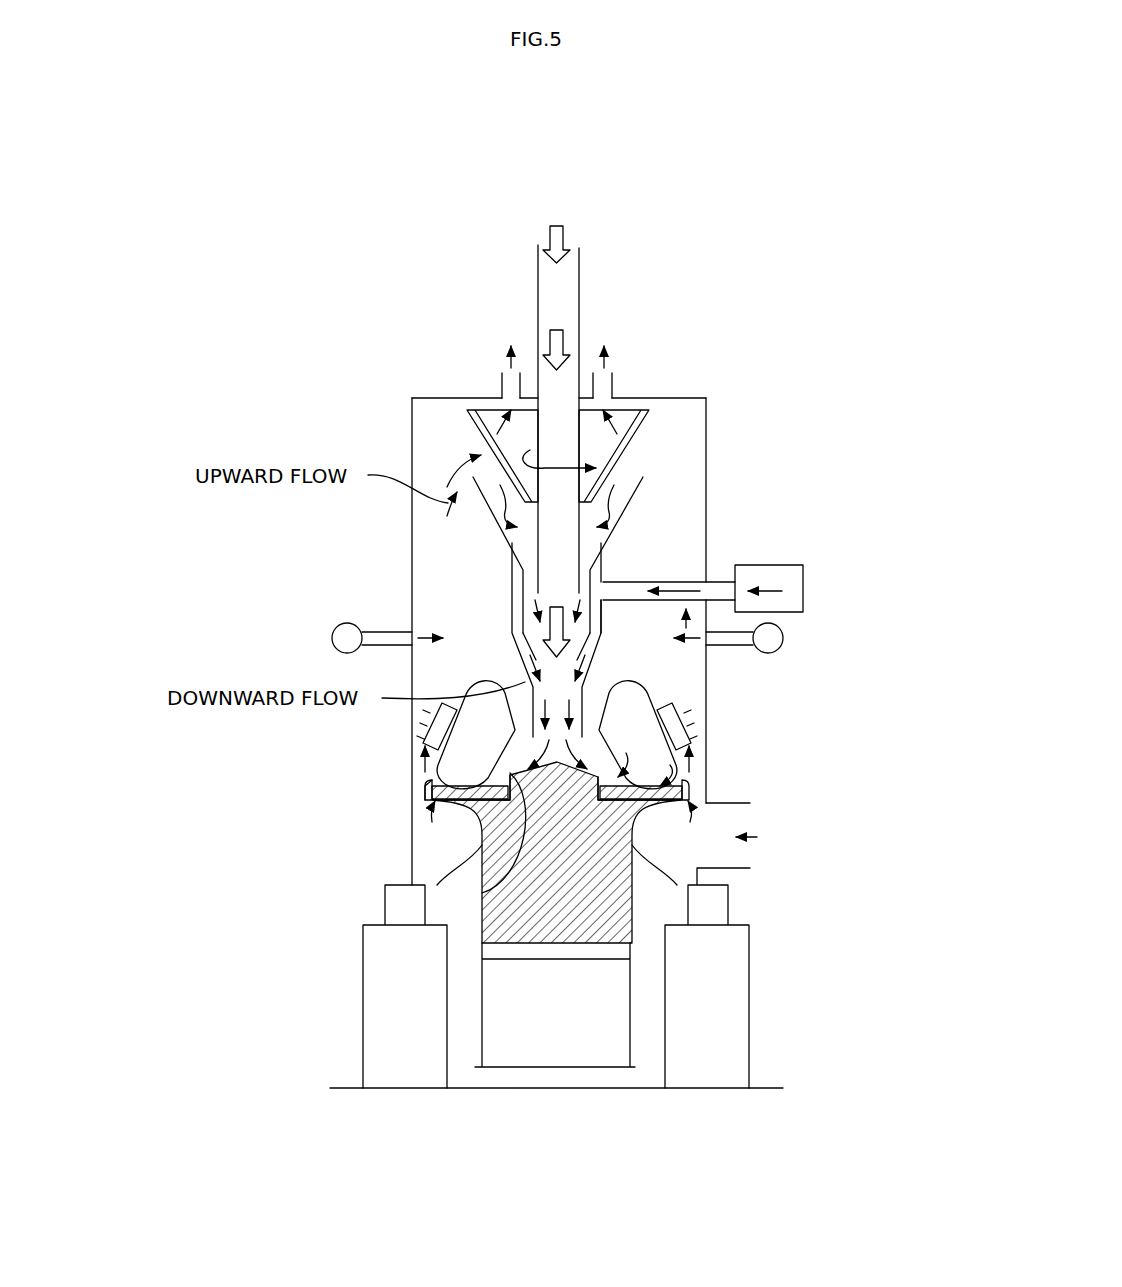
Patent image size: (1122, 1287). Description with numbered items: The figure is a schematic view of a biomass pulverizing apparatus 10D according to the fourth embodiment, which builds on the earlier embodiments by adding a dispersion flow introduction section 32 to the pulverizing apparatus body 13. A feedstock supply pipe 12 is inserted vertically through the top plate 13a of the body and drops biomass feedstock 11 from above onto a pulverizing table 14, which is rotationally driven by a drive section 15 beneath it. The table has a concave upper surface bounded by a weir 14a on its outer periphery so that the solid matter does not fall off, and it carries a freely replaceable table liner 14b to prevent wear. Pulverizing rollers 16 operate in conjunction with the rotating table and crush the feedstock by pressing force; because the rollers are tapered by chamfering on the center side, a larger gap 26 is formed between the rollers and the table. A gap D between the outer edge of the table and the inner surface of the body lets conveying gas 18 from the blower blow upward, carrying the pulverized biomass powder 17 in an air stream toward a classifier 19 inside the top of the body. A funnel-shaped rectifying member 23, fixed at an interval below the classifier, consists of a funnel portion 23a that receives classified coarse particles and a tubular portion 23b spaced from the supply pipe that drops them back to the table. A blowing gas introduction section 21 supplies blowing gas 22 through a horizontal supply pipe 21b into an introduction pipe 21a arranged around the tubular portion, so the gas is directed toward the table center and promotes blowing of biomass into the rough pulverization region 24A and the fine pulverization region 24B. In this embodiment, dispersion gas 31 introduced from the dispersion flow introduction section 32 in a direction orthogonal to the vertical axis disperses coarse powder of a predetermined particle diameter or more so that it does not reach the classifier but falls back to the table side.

The biomass pulverizing apparatus 10D is at (540, 187).
The biomass feedstock 11 is at (566, 240).
The feedstock supply pipe 12 is at (580, 272).
The pulverizing apparatus body 13 is at (412, 418).
The top plate 13a is at (447, 397).
The pulverizing table 14 is at (425, 781).
The weir 14a is at (425, 790).
The table liner 14b is at (452, 866).
The drive section 15 is at (578, 1048).
The pulverizing rollers 16 is at (637, 694).
The biomass powder 17 is at (614, 357).
The conveying gas 18 is at (760, 840).
The classifier 19 is at (633, 440).
The blowing gas introduction section 21 is at (762, 565).
The introduction pipe 21a is at (524, 642).
The supply pipe 21b is at (648, 602).
The blowing gas 22 is at (678, 592).
The funnel-shaped rectifying member 23 is at (778, 440).
The funnel portion 23a is at (633, 500).
The tubular portion 23b is at (603, 572).
The rough pulverization region 24A is at (623, 777).
The fine pulverization region 24B is at (693, 793).
The gap 26 is at (482, 893).
The dispersion gas 31 is at (418, 646).
The dispersion flow introduction section 32 is at (785, 638).
The gap D is at (697, 806).